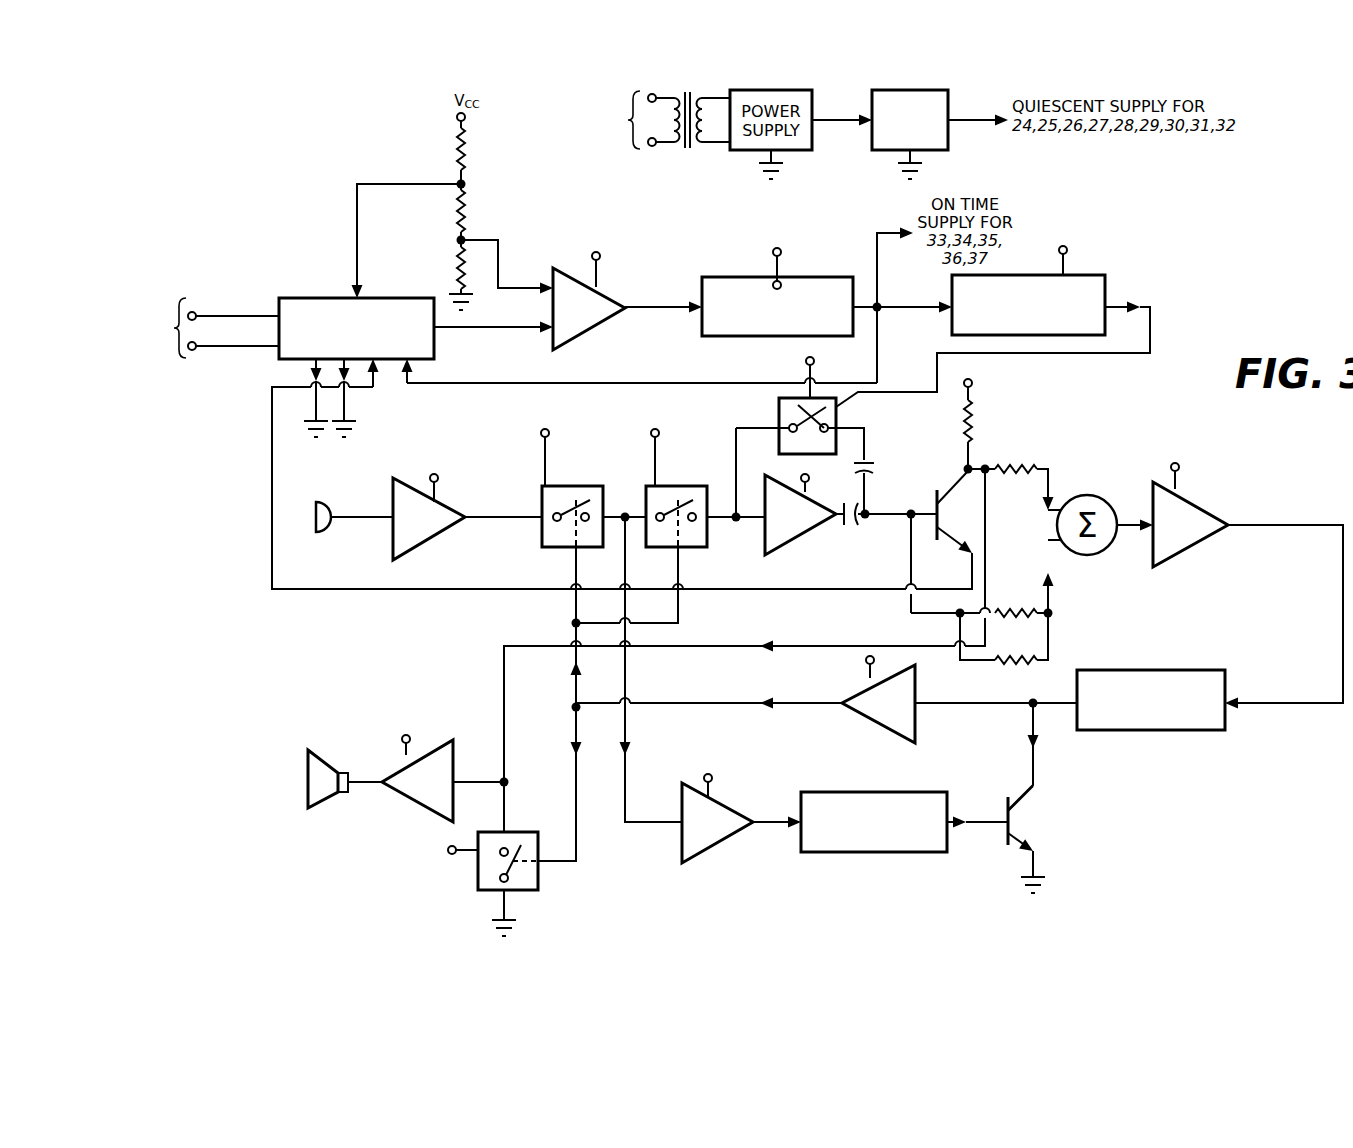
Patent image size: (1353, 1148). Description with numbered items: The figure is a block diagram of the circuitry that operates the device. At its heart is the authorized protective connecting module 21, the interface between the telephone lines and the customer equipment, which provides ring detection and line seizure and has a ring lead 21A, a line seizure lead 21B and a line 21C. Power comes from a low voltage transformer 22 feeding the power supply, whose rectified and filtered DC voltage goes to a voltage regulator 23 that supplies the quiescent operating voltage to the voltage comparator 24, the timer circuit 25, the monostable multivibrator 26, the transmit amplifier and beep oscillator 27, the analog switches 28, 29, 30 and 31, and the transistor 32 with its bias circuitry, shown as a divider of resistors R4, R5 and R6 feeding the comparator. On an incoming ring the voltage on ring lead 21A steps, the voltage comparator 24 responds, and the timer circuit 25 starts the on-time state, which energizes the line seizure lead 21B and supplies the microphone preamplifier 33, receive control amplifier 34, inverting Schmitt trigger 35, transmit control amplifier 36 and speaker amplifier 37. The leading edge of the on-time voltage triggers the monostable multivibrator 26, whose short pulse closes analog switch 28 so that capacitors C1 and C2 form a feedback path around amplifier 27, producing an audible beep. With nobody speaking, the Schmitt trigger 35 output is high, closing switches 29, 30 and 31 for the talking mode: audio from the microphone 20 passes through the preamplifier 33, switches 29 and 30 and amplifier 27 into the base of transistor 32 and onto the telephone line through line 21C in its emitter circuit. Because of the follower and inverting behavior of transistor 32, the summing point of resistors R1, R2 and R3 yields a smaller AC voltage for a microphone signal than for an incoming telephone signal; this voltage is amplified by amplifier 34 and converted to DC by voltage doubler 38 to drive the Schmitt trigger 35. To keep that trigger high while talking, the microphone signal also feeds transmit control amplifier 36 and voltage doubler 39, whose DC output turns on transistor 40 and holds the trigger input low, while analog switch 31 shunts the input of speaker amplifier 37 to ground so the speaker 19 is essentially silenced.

The speaker 19 is at (320, 748).
The microphone 20 is at (315, 530).
The authorized protective connecting module (APCM) 21 is at (312, 288).
The ring lead 21A is at (480, 330).
The line seizure lead 21B is at (612, 383).
The line 21C is at (272, 472).
The low voltage transformer 22 is at (680, 150).
The voltage regulator 23 is at (950, 98).
The voltage comparator 24 is at (594, 320).
The timer circuit 25 is at (822, 277).
The monostable multivibrator 26 is at (1085, 275).
The transmit amplifier and beep oscillator 27 is at (798, 527).
The analog switch 28 is at (840, 418).
The analog switch 29 is at (584, 486).
The analog switch 30 is at (687, 486).
The analog switch 31 is at (540, 880).
The transistor 32 is at (937, 514).
The microphone preamplifier 33 is at (423, 529).
The receive control amplifier 34 is at (1187, 537).
The inverting Schmitt trigger 35 is at (889, 719).
The transmit control amplifier 36 is at (715, 835).
The speaker amplifier 37 is at (435, 795).
The voltage doubler 38 is at (1178, 732).
The voltage doubler 39 is at (896, 853).
The transistor 40 is at (1015, 808).
The resistor R1 is at (1028, 487).
The resistor R2 is at (986, 579).
The resistor R3 is at (1004, 651).
The resistor R4 is at (475, 149).
The resistor R5 is at (475, 211).
The resistor R6 is at (445, 268).
The capacitor C1 is at (850, 526).
The capacitor C2 is at (876, 483).